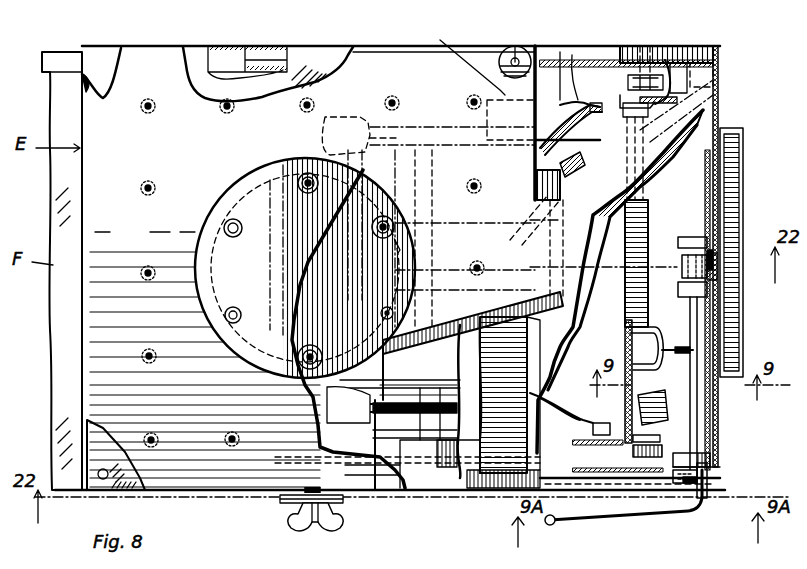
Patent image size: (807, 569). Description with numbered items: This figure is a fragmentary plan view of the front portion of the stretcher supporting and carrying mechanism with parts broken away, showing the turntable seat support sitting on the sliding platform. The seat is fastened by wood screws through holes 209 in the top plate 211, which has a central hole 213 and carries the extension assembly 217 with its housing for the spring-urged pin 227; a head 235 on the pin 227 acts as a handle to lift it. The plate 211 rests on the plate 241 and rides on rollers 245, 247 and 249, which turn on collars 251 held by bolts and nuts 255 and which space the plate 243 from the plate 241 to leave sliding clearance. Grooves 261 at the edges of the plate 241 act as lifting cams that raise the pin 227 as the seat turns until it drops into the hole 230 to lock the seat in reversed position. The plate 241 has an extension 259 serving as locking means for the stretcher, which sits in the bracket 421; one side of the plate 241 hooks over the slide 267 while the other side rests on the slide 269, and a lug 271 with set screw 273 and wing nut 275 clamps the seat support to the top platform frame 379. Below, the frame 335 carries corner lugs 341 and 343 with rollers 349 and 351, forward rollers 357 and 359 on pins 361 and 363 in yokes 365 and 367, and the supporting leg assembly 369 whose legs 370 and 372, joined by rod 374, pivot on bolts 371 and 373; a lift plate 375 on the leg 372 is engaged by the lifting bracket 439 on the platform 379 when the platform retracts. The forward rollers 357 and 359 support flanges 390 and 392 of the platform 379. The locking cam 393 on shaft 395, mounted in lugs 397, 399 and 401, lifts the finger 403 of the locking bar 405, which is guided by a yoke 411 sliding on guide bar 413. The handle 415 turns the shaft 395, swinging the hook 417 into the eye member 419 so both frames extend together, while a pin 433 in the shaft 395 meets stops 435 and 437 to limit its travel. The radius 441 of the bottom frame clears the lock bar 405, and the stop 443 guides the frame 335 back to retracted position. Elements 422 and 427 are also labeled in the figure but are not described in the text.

The holes 209 is at (148, 185).
The top plate 211 is at (95, 278).
The central hole 213 is at (392, 245).
The extension assembly 217 is at (670, 255).
The pin 227 is at (516, 46).
The hole 230 is at (98, 474).
The head 235 is at (505, 52).
The plate 241 is at (400, 470).
The plate 243 is at (210, 220).
The roller 245 is at (303, 335).
The roller 247 is at (398, 220).
The roller 249 is at (280, 188).
The collars 251 is at (372, 227).
The nuts 255 is at (242, 220).
The extension 259 is at (590, 302).
The grooves 261 is at (84, 74).
The slide 267 is at (718, 50).
The slide 269 is at (462, 490).
The lug 271 is at (340, 506).
The set screw 273 is at (300, 500).
The wing nut 275 is at (298, 528).
The frame 335 is at (625, 340).
The lug 341 is at (632, 46).
The lug 343 is at (648, 395).
The roller 349 is at (720, 80).
The roller 351 is at (668, 410).
The forward roller 357 is at (640, 480).
The forward roller 359 is at (672, 68).
The pin 361 is at (665, 485).
The pin 363 is at (645, 60).
The yoke 365 is at (620, 485).
The yoke 367 is at (668, 62).
The supporting leg assembly 369 is at (400, 178).
The supporting leg 370 is at (455, 490).
The bolt 371 is at (640, 115).
The supporting leg 372 is at (380, 125).
The bolt 373 is at (598, 420).
The rod 374 is at (590, 100).
The lift plate 375 is at (466, 168).
The top platform frame 379 is at (718, 63).
The flange 390 is at (550, 46).
The flange 392 is at (520, 500).
The locking cam 393 is at (712, 240).
The shaft 395 is at (672, 330).
The lug 397 is at (743, 185).
The lug 399 is at (716, 262).
The lug 401 is at (712, 455).
The lift finger 403 is at (745, 170).
The locking bar 405 is at (710, 240).
The yoke 411 is at (712, 272).
The guide bar 413 is at (712, 294).
The handle member 415 is at (646, 513).
The hook member 417 is at (662, 350).
The eye member 419 is at (650, 340).
The bracket 421 is at (743, 160).
The frame upright 422 is at (742, 340).
The arm 427 is at (698, 172).
The pin 433 is at (698, 485).
The stop 435 is at (703, 500).
The stop 437 is at (700, 475).
The lifting bracket 439 is at (445, 40).
The radius 441 is at (700, 395).
The stop 443 is at (722, 102).